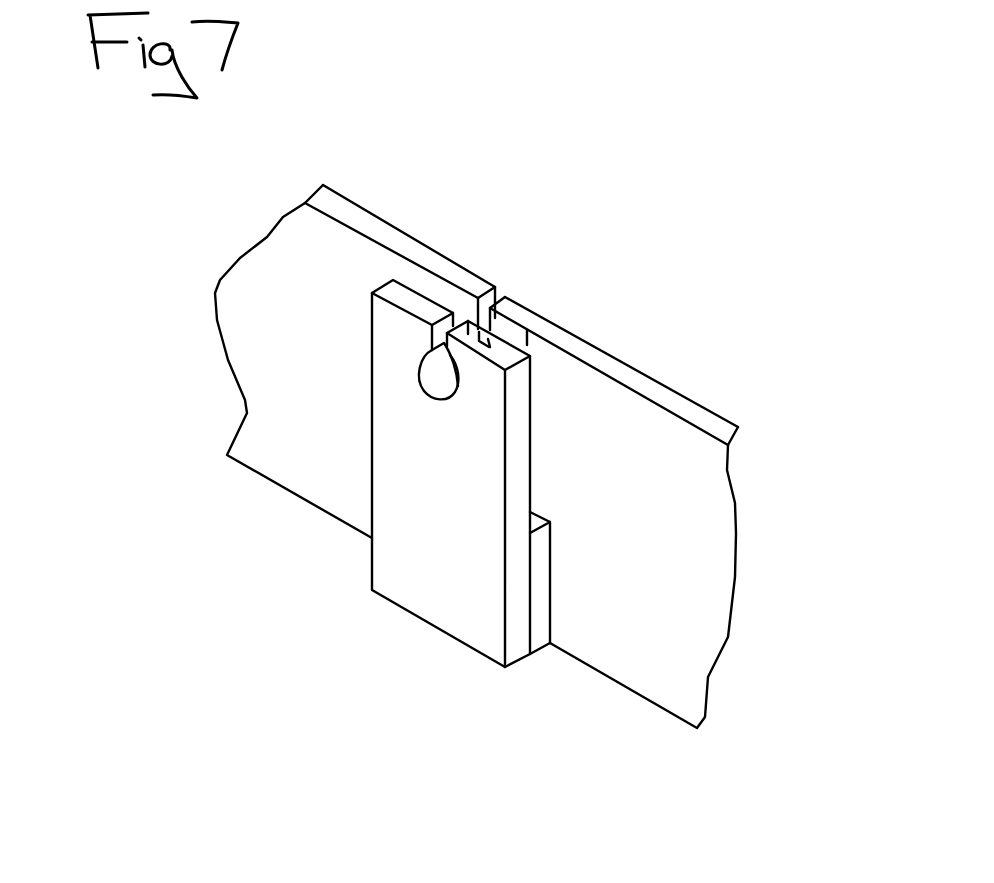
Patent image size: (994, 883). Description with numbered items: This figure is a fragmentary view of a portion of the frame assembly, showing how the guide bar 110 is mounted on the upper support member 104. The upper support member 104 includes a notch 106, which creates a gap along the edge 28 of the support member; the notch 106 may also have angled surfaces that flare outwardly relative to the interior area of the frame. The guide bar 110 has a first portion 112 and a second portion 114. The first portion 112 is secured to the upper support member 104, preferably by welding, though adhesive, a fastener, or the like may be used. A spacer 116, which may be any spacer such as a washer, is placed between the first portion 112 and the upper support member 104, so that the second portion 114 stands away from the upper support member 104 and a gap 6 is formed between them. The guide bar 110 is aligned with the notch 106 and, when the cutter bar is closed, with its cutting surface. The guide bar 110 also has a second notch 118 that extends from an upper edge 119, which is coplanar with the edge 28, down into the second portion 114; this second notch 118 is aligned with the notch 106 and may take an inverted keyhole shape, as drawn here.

The edge 28 is at (647, 382).
The upper support member 104 is at (546, 453).
The notch 106 is at (502, 297).
The gap 6 is at (593, 289).
The guide bar 110 is at (414, 457).
The first portion 112 is at (407, 431).
The second portion 114 is at (393, 392).
The spacer 116 is at (565, 718).
The second notch 118 is at (515, 208).
The upper edge 119 is at (405, 297).